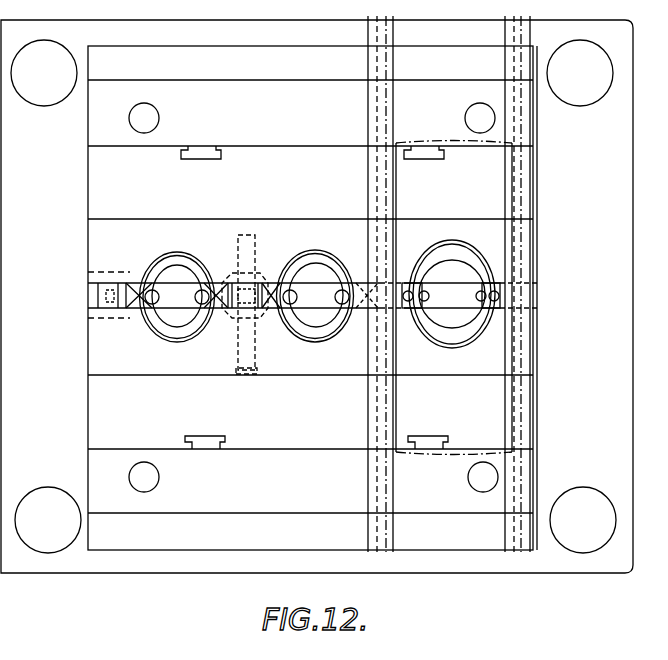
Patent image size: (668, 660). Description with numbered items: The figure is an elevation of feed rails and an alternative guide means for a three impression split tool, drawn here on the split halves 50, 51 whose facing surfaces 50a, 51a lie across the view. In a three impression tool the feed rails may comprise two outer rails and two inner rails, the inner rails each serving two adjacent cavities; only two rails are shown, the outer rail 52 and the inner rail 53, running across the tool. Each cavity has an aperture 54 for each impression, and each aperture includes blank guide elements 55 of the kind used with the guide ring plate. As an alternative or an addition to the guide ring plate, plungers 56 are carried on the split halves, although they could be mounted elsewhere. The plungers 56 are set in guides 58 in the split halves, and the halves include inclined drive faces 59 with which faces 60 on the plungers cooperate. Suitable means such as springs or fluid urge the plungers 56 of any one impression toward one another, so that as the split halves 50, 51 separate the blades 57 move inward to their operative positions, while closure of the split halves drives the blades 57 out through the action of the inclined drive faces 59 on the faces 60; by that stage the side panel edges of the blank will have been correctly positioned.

The upper mold plate 50 is at (343, 162).
The upper plate face 50a is at (310, 114).
The lower mold plate 51 is at (345, 440).
The lower plate face 51a is at (292, 545).
The outer rail 52 is at (524, 400).
The inner rail 53 is at (383, 393).
The aperture 54 is at (495, 312).
The blank guide element 55 is at (401, 270).
The plunger 56 is at (140, 290).
The blade 57 is at (152, 280).
The guide 58 is at (246, 341).
The inclined drive face 59 is at (135, 312).
The face 60 is at (150, 312).